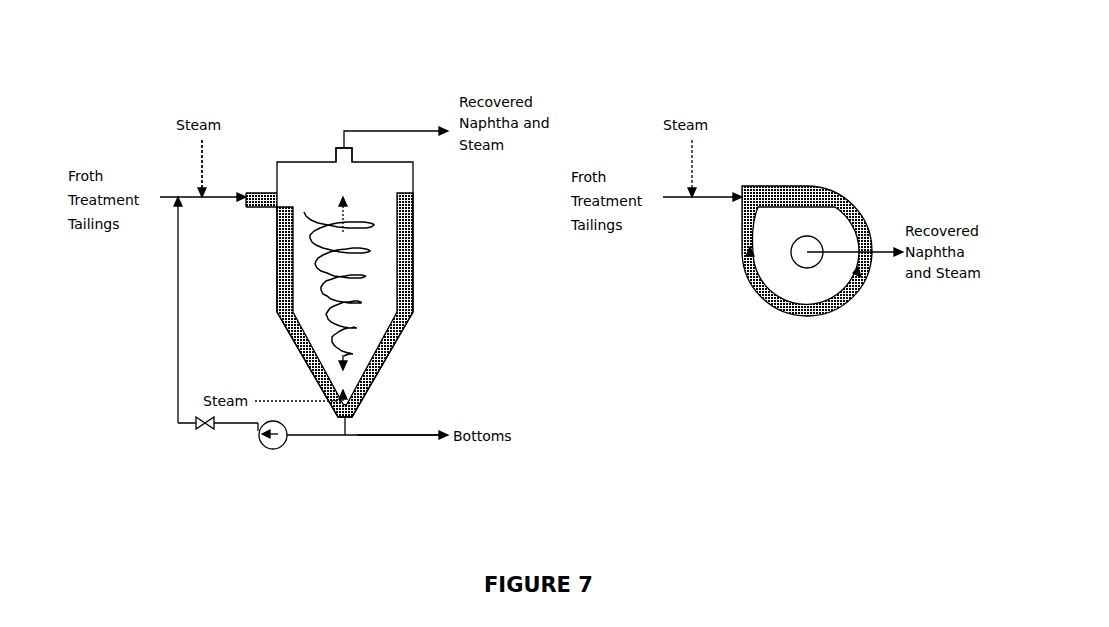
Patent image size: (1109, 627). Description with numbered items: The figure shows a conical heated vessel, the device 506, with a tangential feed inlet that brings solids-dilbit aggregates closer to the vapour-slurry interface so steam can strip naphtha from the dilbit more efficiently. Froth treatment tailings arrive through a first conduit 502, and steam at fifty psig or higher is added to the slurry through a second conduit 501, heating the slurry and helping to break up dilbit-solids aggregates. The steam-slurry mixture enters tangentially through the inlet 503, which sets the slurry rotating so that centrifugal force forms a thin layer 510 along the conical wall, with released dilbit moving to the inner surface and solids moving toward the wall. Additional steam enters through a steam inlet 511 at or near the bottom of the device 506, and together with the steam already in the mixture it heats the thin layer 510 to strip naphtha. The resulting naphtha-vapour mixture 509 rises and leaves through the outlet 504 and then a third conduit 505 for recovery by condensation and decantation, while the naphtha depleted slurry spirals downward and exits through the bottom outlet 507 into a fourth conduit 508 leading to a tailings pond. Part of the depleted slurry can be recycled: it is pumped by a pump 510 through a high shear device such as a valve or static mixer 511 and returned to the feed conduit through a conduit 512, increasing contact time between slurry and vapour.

The second conduit 501 is at (204, 170).
The first conduit 502 is at (186, 201).
The inlet 503 is at (263, 211).
The outlet 504 is at (336, 150).
The third conduit 505 is at (393, 127).
The device 506 is at (413, 242).
The bottom outlet 507 is at (352, 423).
The fourth conduit 508 is at (408, 434).
The naphtha-vapour mixture 509 is at (337, 458).
The thin layer 510 is at (288, 233).
The steam inlet 511 is at (198, 427).
The conduit 512 is at (189, 310).